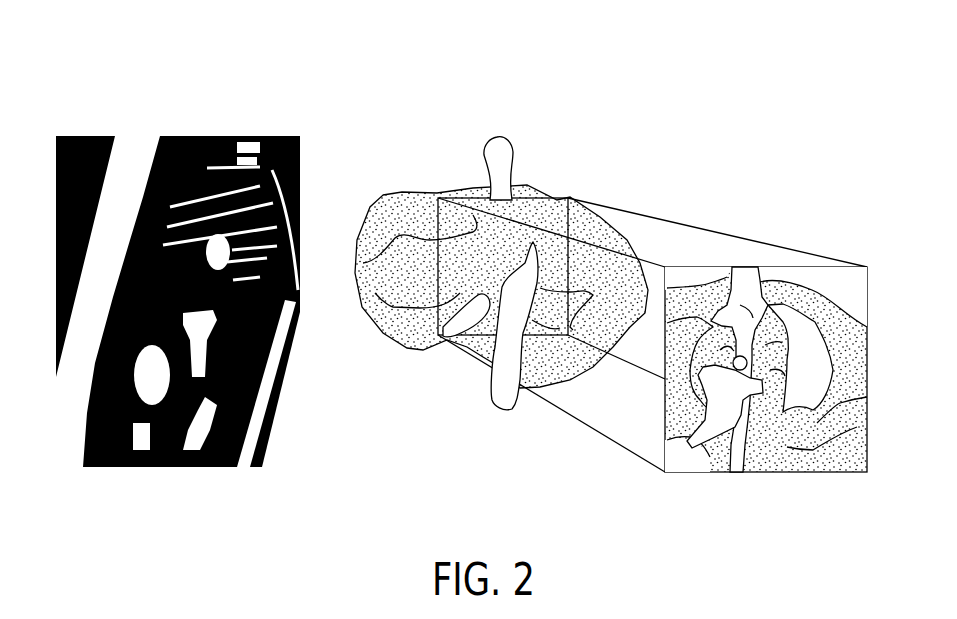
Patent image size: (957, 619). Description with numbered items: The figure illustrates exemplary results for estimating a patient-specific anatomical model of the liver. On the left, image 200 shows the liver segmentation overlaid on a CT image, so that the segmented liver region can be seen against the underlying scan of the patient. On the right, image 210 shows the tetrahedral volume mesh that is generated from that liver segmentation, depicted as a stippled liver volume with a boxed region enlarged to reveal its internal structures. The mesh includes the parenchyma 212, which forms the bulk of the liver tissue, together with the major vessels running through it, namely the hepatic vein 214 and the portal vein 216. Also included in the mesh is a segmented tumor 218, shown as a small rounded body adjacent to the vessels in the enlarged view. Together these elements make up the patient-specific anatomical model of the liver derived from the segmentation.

The image 200 is at (266, 61).
The image 210 is at (611, 319).
The parenchyma 212 is at (586, 228).
The hepatic vein 214 is at (515, 390).
The portal vein 216 is at (457, 327).
The segmented tumor 218 is at (788, 276).